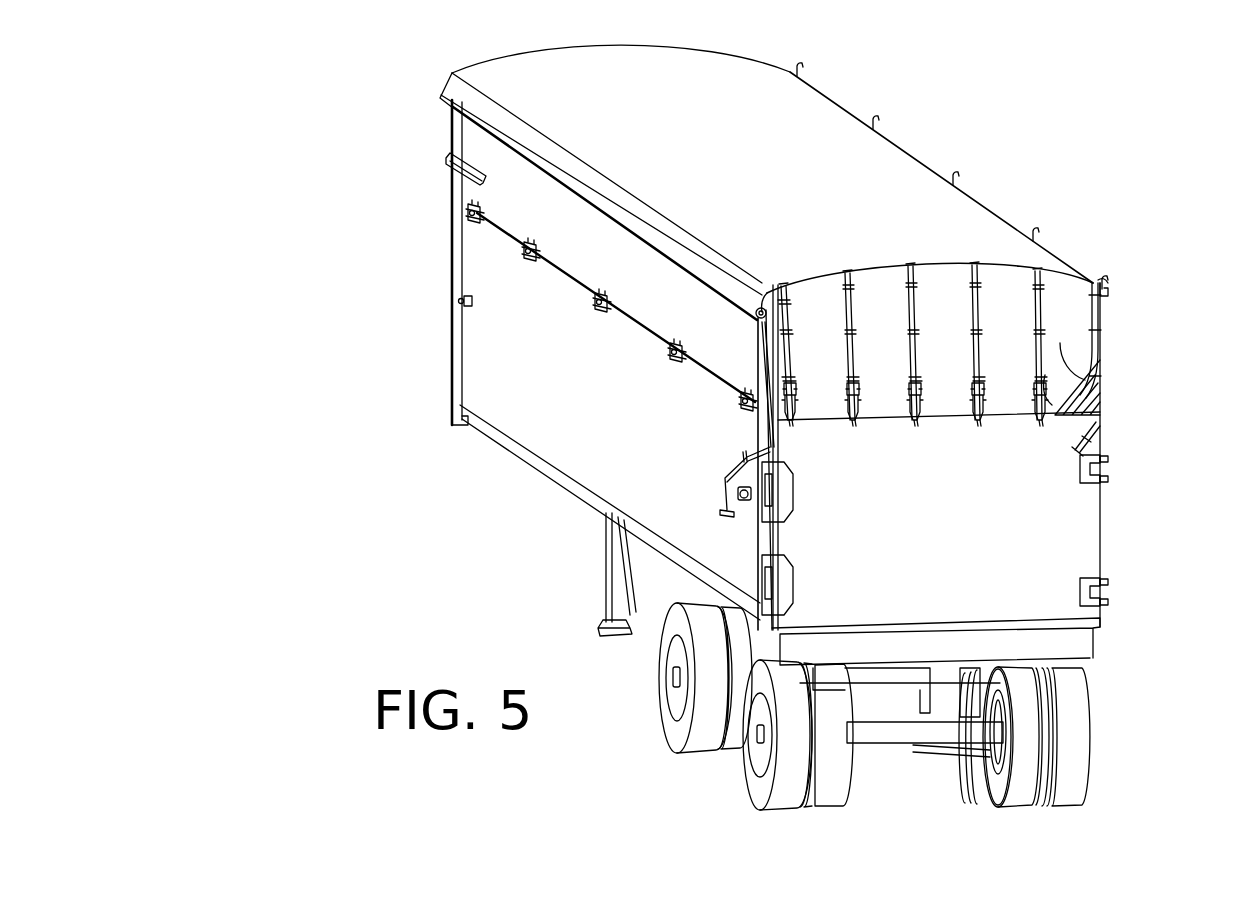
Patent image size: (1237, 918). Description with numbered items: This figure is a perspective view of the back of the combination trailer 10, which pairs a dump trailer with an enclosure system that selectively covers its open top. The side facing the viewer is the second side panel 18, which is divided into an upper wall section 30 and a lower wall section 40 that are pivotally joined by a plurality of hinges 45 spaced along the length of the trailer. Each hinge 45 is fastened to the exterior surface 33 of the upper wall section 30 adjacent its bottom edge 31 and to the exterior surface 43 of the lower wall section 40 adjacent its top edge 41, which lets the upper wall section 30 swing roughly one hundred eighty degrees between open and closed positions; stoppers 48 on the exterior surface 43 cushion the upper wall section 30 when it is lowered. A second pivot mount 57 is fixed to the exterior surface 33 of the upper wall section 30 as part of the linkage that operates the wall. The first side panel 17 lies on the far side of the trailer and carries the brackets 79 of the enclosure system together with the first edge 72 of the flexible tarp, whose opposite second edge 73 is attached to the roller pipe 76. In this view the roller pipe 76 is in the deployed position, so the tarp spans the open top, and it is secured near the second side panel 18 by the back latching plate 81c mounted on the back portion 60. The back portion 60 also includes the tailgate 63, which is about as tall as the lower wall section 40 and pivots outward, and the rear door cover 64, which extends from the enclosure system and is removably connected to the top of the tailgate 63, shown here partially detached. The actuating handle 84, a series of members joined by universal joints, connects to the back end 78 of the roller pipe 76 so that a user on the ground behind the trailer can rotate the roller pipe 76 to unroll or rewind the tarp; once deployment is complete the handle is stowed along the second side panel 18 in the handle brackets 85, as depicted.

The combination trailer 10 is at (268, 125).
The first side panel 17 is at (1085, 392).
The second side panel 18 is at (475, 422).
The upper wall section 30 is at (583, 275).
The bottom edge 31 is at (513, 367).
The exterior surface 33 is at (683, 317).
The lower wall section 40 is at (730, 590).
The top edge 41 is at (553, 273).
The exterior surface 43 is at (737, 537).
The hinges 45 is at (523, 258).
The stoppers 48 is at (463, 300).
The second pivot mount 57 is at (452, 167).
The back portion 60 is at (1062, 612).
The tailgate 63 is at (827, 590).
The rear door cover 64 is at (1065, 345).
The first edge 72 is at (1110, 288).
The second edge 73 is at (772, 285).
The roller pipe 76 is at (767, 313).
The back end 78 is at (780, 327).
The brackets 79 is at (803, 60).
The back latching plate 81c is at (758, 316).
The actuating handle 84 is at (747, 518).
The handle brackets 85 is at (735, 497).